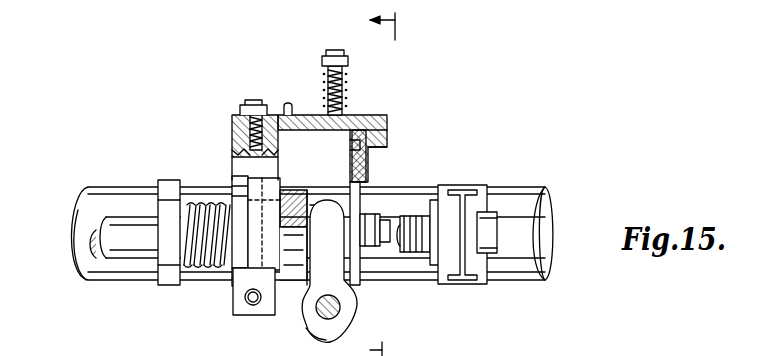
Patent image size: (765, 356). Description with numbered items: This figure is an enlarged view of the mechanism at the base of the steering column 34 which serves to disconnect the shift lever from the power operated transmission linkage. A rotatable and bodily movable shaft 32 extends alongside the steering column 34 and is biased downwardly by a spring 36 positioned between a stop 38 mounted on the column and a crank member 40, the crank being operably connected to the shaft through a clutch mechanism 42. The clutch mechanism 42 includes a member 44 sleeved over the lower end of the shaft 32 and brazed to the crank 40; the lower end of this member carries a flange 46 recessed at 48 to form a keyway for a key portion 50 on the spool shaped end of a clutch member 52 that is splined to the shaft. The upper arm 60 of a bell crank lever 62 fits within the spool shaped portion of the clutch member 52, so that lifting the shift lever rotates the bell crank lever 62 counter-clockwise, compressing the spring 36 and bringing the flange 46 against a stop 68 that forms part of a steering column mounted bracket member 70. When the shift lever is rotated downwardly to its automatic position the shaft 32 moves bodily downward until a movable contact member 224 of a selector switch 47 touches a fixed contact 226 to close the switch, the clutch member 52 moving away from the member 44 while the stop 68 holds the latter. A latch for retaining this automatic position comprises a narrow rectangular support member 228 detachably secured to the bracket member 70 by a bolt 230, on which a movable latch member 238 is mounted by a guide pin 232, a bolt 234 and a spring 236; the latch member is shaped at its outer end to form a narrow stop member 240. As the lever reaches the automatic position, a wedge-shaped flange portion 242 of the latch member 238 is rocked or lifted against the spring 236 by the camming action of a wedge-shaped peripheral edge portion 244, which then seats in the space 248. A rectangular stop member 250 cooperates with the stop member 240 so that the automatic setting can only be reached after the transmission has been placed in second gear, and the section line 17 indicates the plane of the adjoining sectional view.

The section line 17- 17 is at (394, 184).
The shaft 32 is at (114, 217).
The steering column 34 is at (522, 190).
The spring 36 is at (200, 268).
The stop 38 is at (165, 190).
The crank member 40 is at (236, 182).
The clutch mechanism 42 is at (298, 287).
The member 44 is at (246, 268).
The flange 46 is at (284, 188).
The selector switch 47 is at (414, 226).
The recess 48 is at (302, 200).
The key portion 50 is at (292, 222).
The clutch member 52 is at (302, 286).
The upper arm 60 is at (354, 292).
The bell crank lever 62 is at (396, 338).
The stop 68 is at (278, 164).
The bracket member 70 is at (240, 135).
The movable contact member 224 is at (390, 228).
The fixed contact 226 is at (470, 186).
The support member 228 is at (240, 118).
The bolt 230 is at (243, 105).
The guide pin 232 is at (288, 104).
The bolt 234 is at (323, 80).
The spring 236 is at (322, 62).
The movable latch member 238 is at (346, 114).
The stop member 240 is at (387, 114).
The wedge-shaped flange portion 242 is at (352, 127).
The wedge-shaped peripheral edge portion 244 is at (352, 148).
The space 248 is at (387, 142).
The stop member 250 is at (368, 158).